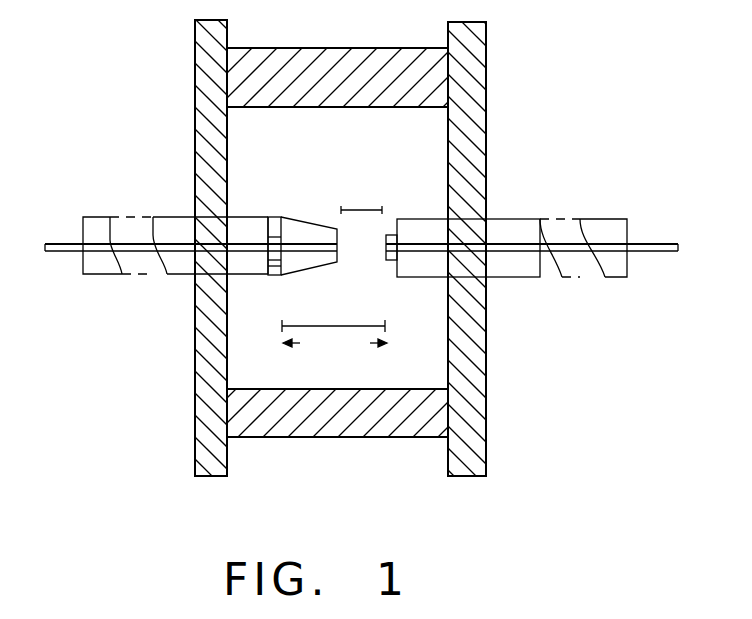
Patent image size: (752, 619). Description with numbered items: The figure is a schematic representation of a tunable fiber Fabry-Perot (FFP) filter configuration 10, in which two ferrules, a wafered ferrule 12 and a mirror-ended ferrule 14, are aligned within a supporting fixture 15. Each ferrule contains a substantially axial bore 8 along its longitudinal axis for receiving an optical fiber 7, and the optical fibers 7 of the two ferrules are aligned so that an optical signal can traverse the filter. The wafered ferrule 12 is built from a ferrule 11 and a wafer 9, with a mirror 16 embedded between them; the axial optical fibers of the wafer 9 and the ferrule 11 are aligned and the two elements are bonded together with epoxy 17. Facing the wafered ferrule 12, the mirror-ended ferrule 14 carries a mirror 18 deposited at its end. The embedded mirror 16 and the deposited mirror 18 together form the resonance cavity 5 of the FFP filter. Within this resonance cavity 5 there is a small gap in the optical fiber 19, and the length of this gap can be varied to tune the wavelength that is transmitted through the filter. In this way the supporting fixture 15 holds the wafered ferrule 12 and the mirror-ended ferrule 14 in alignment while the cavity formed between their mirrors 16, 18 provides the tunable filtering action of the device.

The FFP filter configuration 10 is at (567, 45).
The supporting fixture 15 is at (486, 120).
The optical fiber 7 is at (67, 252).
The wafered ferrule 12 is at (190, 228).
The ferrule 11 is at (200, 262).
The axial bore 8 is at (247, 228).
The embedded mirror 16 is at (283, 240).
The epoxy 17 is at (275, 268).
The wafer 9 is at (320, 232).
The gap in the optical fiber 19 is at (362, 205).
The mirror 18 is at (388, 262).
The mirror-ended ferrule 14 is at (502, 232).
The resonance cavity 5 is at (334, 340).